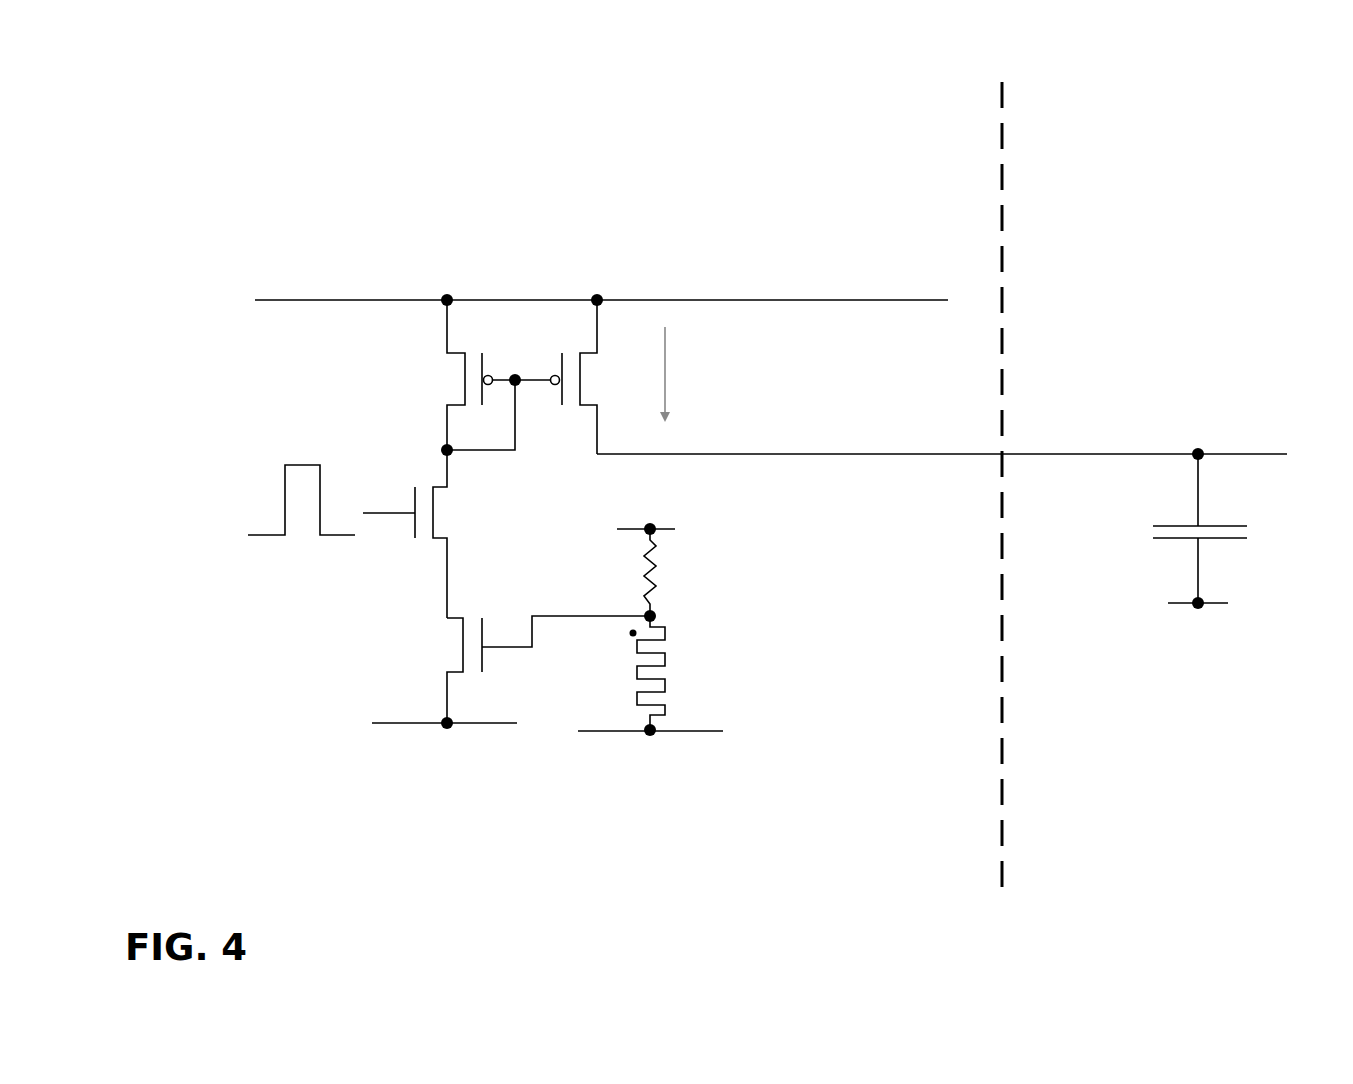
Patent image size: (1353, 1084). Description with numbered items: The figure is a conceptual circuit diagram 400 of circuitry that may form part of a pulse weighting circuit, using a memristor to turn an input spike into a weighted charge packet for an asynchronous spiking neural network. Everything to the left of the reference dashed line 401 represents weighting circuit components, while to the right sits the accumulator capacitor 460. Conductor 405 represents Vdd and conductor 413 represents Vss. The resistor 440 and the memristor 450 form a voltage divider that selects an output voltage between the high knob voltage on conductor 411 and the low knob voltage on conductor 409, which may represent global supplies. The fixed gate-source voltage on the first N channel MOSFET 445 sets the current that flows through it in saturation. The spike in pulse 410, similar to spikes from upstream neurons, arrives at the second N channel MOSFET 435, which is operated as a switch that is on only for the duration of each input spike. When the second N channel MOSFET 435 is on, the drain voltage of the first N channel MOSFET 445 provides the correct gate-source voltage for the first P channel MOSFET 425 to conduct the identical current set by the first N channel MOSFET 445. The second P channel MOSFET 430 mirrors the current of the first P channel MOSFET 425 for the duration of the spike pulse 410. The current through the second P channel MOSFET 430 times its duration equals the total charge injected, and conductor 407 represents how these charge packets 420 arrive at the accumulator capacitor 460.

The circuit diagram 400 is at (225, 118).
The reference dashed line 401 is at (1019, 471).
The conductor 405 is at (645, 300).
The conductor 407 is at (1064, 454).
The conductor 409 is at (713, 733).
The spike in pulse 410 is at (280, 446).
The conductor 411 is at (675, 529).
The conductor 413 is at (408, 725).
The charge packets 420 is at (668, 378).
The MP1 425 is at (416, 352).
The MP2 430 is at (567, 338).
The MN2 435 is at (420, 466).
The resistor R1 440 is at (636, 576).
The MN1 445 is at (396, 631).
The memristor MR1 450 is at (620, 656).
The capacitor 460 is at (1140, 560).